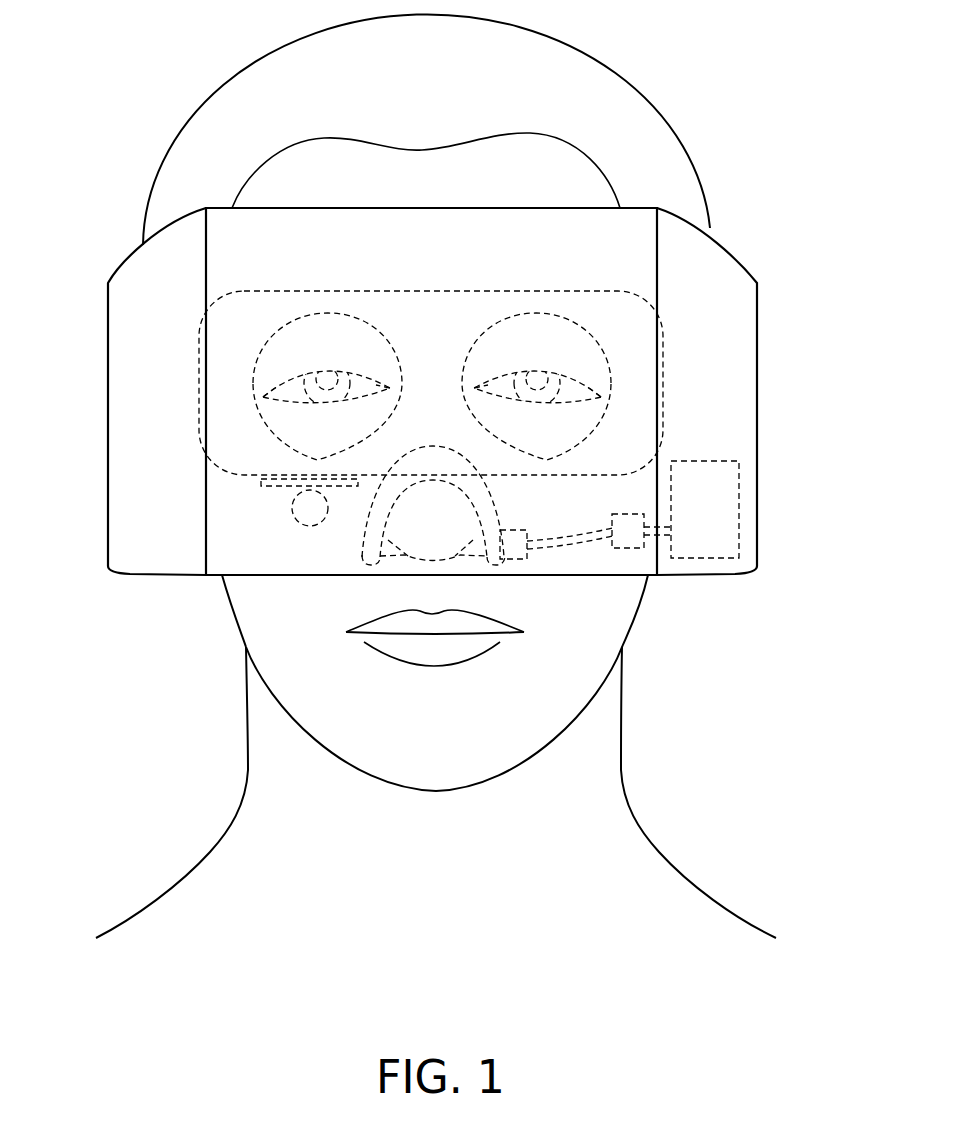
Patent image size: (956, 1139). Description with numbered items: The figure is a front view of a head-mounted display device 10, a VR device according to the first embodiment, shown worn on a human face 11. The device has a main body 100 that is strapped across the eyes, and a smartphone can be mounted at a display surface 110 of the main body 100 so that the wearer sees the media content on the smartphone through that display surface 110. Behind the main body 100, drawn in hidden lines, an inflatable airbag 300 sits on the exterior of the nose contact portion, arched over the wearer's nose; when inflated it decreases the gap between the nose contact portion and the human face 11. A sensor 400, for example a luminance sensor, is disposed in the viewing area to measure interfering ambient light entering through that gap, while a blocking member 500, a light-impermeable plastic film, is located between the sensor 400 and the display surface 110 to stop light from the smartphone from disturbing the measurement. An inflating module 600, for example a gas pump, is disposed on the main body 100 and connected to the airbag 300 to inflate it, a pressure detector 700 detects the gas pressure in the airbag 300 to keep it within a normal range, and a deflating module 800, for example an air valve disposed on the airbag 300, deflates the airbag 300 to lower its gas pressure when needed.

The head-mounted display device 10 is at (110, 242).
The human face 11 is at (280, 624).
The main body 100 is at (130, 429).
The display surface 110 is at (198, 361).
The airbag 300 is at (360, 543).
The sensor 400 is at (300, 509).
The blocking member 500 is at (261, 482).
The inflating module 600 is at (720, 511).
The pressure detector 700 is at (630, 550).
The deflating module 800 is at (515, 552).